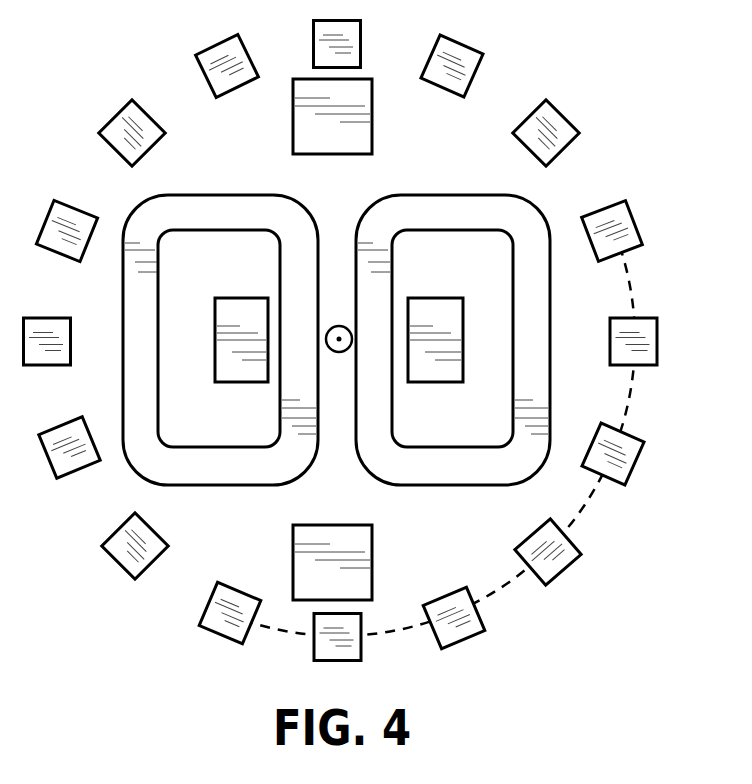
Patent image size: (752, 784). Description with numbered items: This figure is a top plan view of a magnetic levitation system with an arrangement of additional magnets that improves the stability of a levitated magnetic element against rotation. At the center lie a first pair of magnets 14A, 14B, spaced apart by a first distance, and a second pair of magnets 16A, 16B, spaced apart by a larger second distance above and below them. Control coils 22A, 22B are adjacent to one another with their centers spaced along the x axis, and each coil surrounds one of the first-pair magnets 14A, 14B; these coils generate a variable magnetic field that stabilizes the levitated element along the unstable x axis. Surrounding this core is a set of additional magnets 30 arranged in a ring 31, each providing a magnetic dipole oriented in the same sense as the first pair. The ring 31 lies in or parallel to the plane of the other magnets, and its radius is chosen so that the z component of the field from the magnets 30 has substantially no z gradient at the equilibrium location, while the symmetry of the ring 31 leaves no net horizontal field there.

The first magnet of first pair 14A is at (247, 297).
The second magnet of first pair 14B is at (431, 297).
The first magnet of second pair 16A is at (293, 130).
The second magnet of second pair 16B is at (293, 553).
The control coil 22A is at (180, 195).
The control coil 22B is at (494, 195).
The additional magnet 30 is at (568, 565).
The ring 31 is at (631, 388).